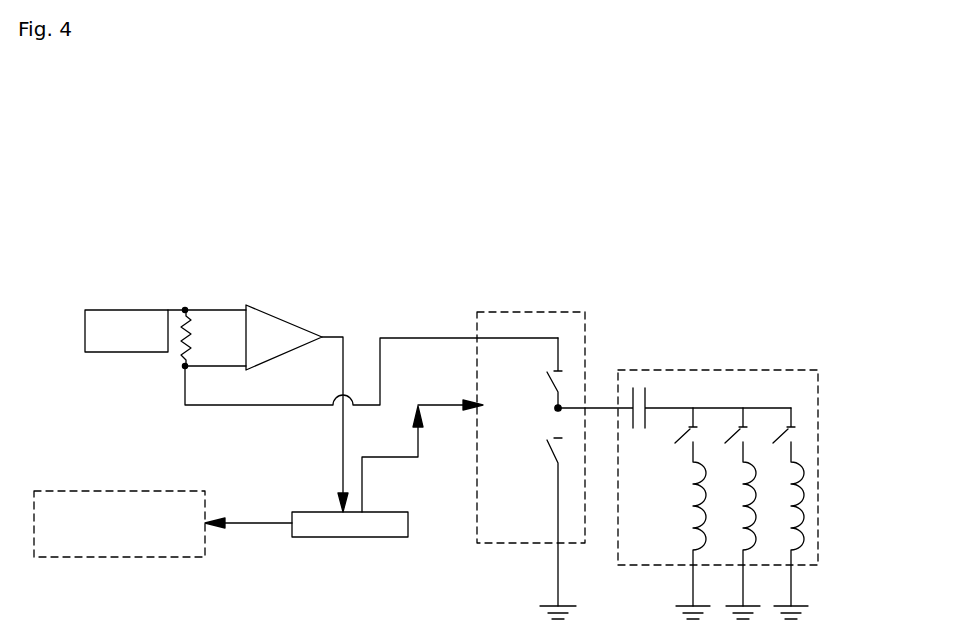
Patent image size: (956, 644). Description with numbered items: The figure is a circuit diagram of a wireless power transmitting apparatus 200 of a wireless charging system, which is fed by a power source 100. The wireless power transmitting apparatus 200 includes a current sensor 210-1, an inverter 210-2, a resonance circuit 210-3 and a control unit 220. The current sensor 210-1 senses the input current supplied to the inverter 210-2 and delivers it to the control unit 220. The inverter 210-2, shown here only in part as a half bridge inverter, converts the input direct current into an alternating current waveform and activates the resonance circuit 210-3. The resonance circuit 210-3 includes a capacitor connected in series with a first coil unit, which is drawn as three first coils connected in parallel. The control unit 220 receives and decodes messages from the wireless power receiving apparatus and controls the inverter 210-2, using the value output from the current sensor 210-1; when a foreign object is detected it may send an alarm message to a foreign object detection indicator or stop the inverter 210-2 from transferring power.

The power source 100 is at (120, 309).
The wireless power transmitting apparatus 200 is at (622, 168).
The current sensor 210-1 is at (278, 328).
The inverter 210-2 is at (577, 325).
The resonance circuit 210-3 is at (783, 368).
The control unit 220 is at (340, 537).